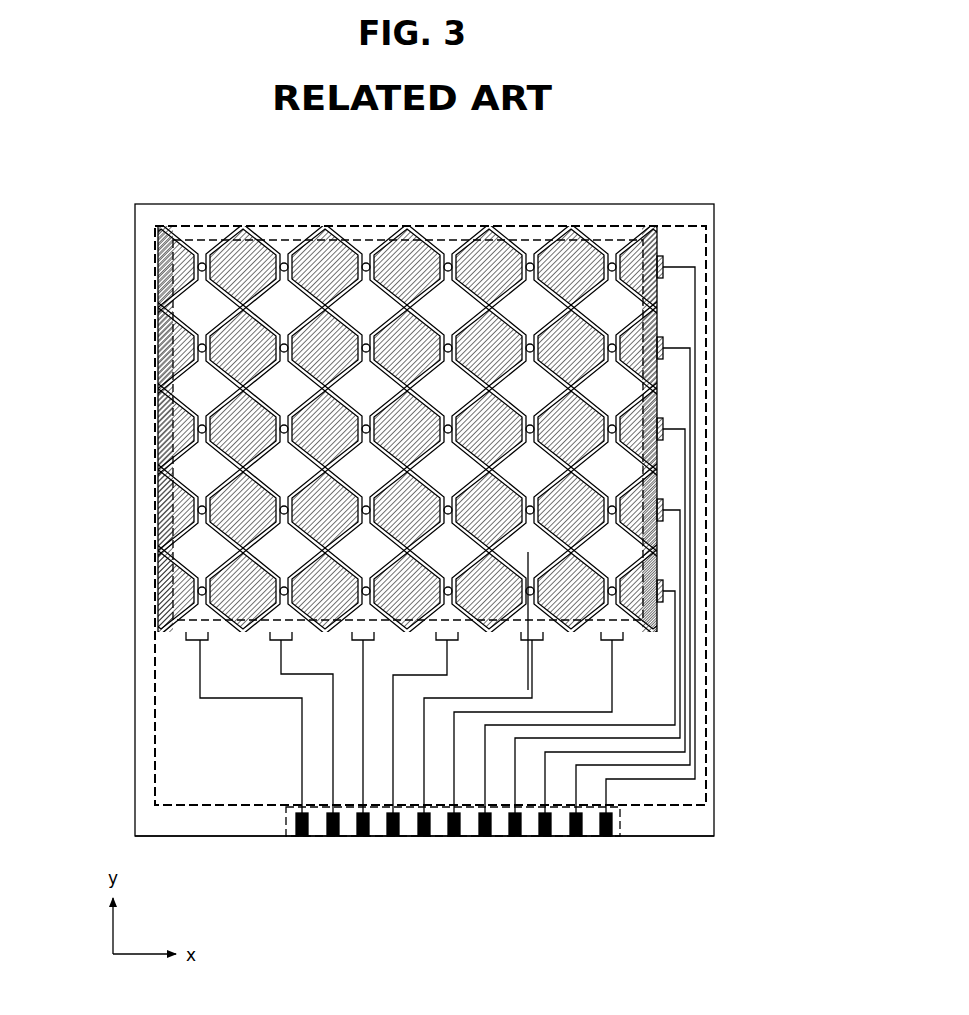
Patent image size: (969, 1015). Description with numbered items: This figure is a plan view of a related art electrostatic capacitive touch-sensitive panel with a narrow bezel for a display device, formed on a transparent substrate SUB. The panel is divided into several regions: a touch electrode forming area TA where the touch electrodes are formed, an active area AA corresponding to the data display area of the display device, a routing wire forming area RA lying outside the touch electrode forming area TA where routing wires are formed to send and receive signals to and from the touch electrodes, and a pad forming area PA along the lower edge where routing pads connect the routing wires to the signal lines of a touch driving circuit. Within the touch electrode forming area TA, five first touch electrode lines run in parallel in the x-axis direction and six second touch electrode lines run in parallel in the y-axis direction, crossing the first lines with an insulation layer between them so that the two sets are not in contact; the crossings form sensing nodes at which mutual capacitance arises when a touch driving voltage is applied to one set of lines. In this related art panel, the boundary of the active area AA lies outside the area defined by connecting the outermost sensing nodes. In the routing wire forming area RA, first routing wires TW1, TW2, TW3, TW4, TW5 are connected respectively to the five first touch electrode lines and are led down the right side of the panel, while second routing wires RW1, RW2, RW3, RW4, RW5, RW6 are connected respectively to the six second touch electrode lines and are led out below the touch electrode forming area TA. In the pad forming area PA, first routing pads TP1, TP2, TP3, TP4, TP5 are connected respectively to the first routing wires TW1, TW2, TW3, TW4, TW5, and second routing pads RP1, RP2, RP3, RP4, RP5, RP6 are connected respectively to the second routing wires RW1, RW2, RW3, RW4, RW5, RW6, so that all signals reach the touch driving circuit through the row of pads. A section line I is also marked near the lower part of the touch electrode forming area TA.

The substrate SUB is at (668, 840).
The touch electrode forming area TA is at (487, 224).
The active area AA is at (597, 238).
The routing wire forming area RA is at (687, 222).
The pad forming area PA is at (280, 822).
The first routing wire TW1 is at (697, 284).
The first routing wire TW2 is at (692, 375).
The first routing wire TW3 is at (687, 456).
The first routing wire TW4 is at (682, 536).
The first routing wire TW5 is at (677, 605).
The second routing wire RW1 is at (201, 681).
The second routing wire RW2 is at (281, 652).
The second routing wire RW3 is at (363, 652).
The second routing wire RW4 is at (447, 652).
The second routing wire RW5 is at (533, 652).
The second routing wire RW6 is at (613, 652).
The second routing pad RP1 is at (300, 840).
The second routing pad RP2 is at (333, 840).
The second routing pad RP3 is at (361, 840).
The second routing pad RP4 is at (393, 840).
The second routing pad RP5 is at (422, 840).
The second routing pad RP6 is at (454, 840).
The first routing pad TP1 is at (604, 840).
The first routing pad TP2 is at (576, 840).
The first routing pad TP3 is at (543, 840).
The first routing pad TP4 is at (515, 840).
The first routing pad TP5 is at (483, 840).
The section line I-I' I is at (526, 554).